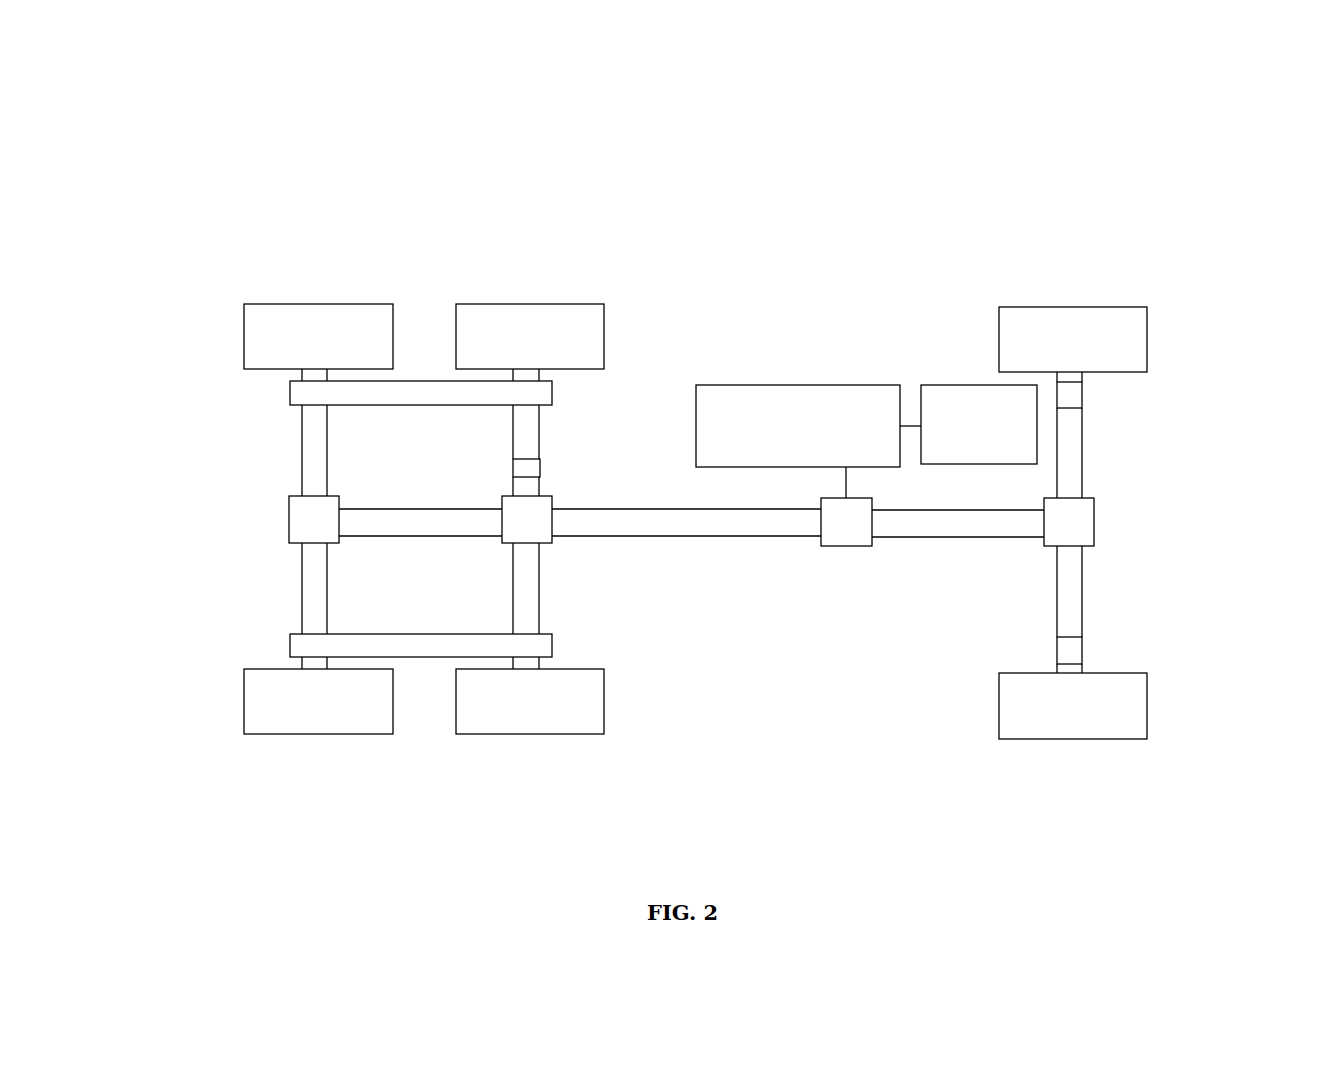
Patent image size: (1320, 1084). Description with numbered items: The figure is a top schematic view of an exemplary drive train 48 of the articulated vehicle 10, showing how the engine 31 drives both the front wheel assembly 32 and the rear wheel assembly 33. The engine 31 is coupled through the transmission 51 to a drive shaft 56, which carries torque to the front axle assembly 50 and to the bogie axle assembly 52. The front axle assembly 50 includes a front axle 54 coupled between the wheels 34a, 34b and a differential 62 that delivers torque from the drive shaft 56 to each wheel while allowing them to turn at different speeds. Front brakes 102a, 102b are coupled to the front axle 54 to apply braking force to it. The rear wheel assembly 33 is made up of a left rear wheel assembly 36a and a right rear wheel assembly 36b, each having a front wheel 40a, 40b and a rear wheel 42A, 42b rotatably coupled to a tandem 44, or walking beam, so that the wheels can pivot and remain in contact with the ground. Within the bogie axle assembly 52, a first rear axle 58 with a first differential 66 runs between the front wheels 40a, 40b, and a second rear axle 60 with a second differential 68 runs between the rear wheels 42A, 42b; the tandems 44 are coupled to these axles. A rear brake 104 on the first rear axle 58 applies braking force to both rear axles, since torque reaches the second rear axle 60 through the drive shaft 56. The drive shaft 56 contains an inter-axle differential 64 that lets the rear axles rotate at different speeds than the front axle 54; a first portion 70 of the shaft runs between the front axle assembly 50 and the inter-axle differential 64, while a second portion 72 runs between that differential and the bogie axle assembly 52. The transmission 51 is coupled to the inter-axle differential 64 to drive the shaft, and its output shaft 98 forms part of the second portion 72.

The vehicle 10 is at (304, 131).
The rear wheel assembly 33 is at (248, 264).
The rear wheel 42A is at (333, 304).
The rear wheel 42b is at (375, 734).
The front wheel 40a is at (556, 304).
The front wheel 40b is at (538, 734).
The tandem 44 is at (430, 381).
The left rear wheel assembly 36a is at (624, 370).
The right rear wheel assembly 36b is at (624, 698).
The drive train 48 is at (751, 284).
The transmission 51 is at (827, 385).
The engine 31 is at (932, 385).
The front wheel 34a is at (1027, 307).
The front wheel 34b is at (1140, 739).
The front wheel assembly 32 is at (1167, 318).
The front brake 102a is at (1082, 406).
The front brake 102b is at (1082, 651).
The front axle assembly 50 is at (1132, 430).
The bogie axle assembly 52 is at (234, 433).
The second differential 68 is at (288, 500).
The first differential 66 is at (502, 500).
The rear brake 104 is at (540, 471).
The output shaft 98 is at (688, 508).
The drive shaft 56 is at (450, 543).
The second rear axle 60 is at (328, 590).
The first rear axle 58 is at (540, 604).
The second portion 72 is at (690, 546).
The inter-axle differential 64 is at (855, 547).
The first portion 70 is at (961, 543).
The differential 62 is at (1094, 528).
The front axle 54 is at (1082, 600).